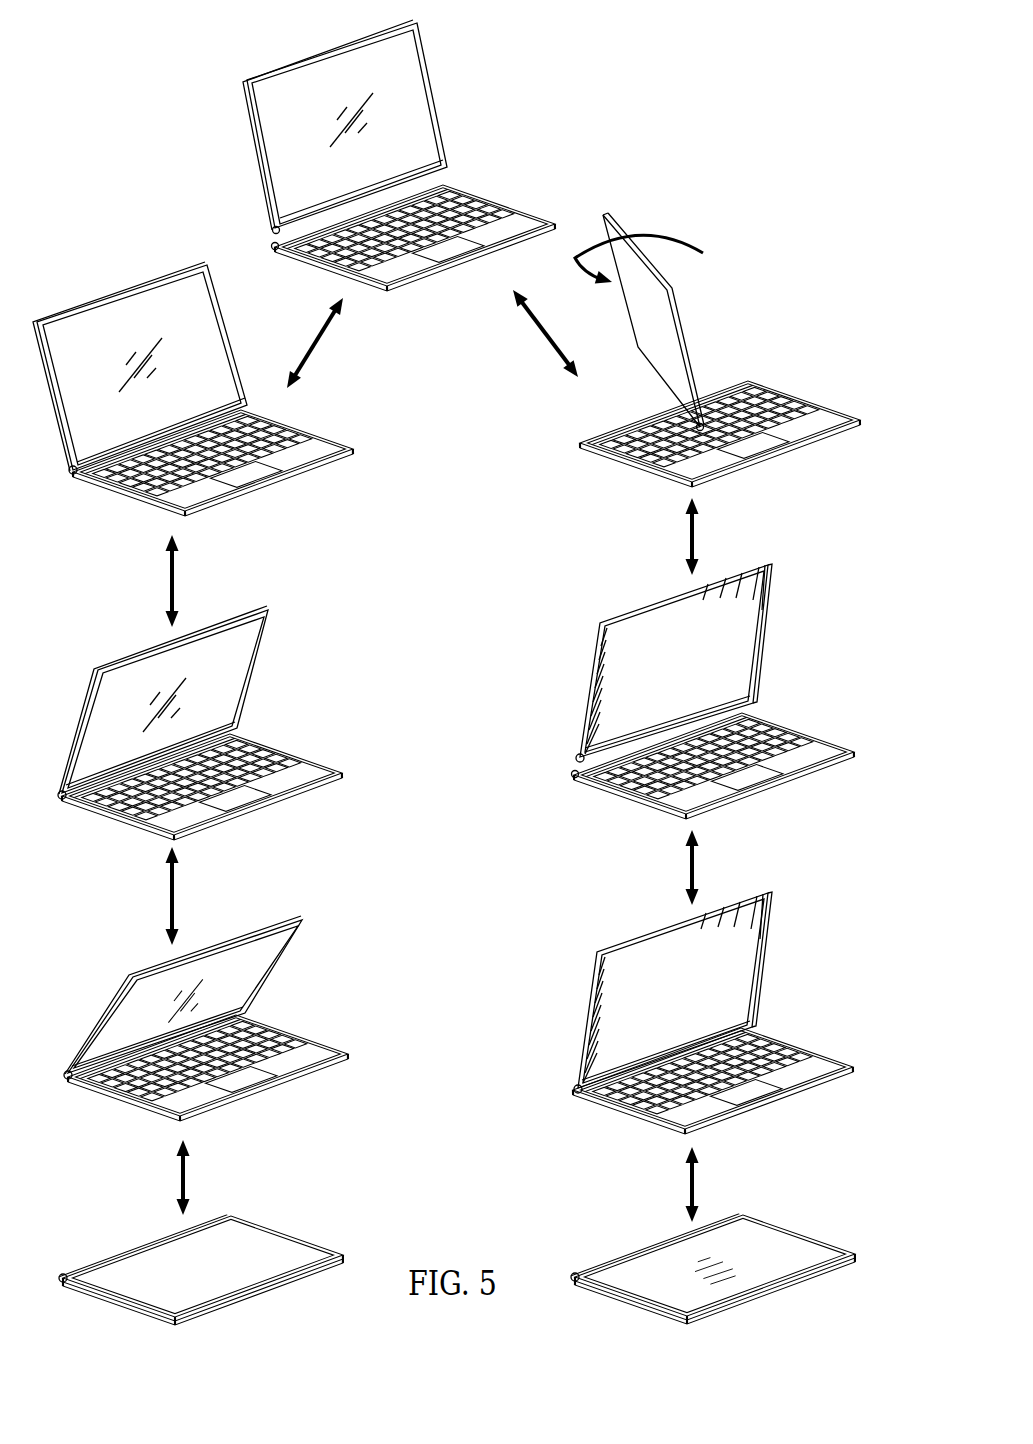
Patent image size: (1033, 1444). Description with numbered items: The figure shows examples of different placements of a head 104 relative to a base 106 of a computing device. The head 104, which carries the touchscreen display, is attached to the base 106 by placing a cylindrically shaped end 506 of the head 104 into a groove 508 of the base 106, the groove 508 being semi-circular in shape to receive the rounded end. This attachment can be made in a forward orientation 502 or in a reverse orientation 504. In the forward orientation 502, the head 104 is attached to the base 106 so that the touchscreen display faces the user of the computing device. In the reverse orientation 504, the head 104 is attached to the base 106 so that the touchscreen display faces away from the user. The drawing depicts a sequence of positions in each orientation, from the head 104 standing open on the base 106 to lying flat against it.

The head 104 is at (436, 92).
The base 106 is at (503, 217).
The forward orientation 502 is at (124, 253).
The reverse orientation 504 is at (763, 264).
The cylindrically shaped end 506 is at (448, 167).
The groove 508 is at (275, 250).